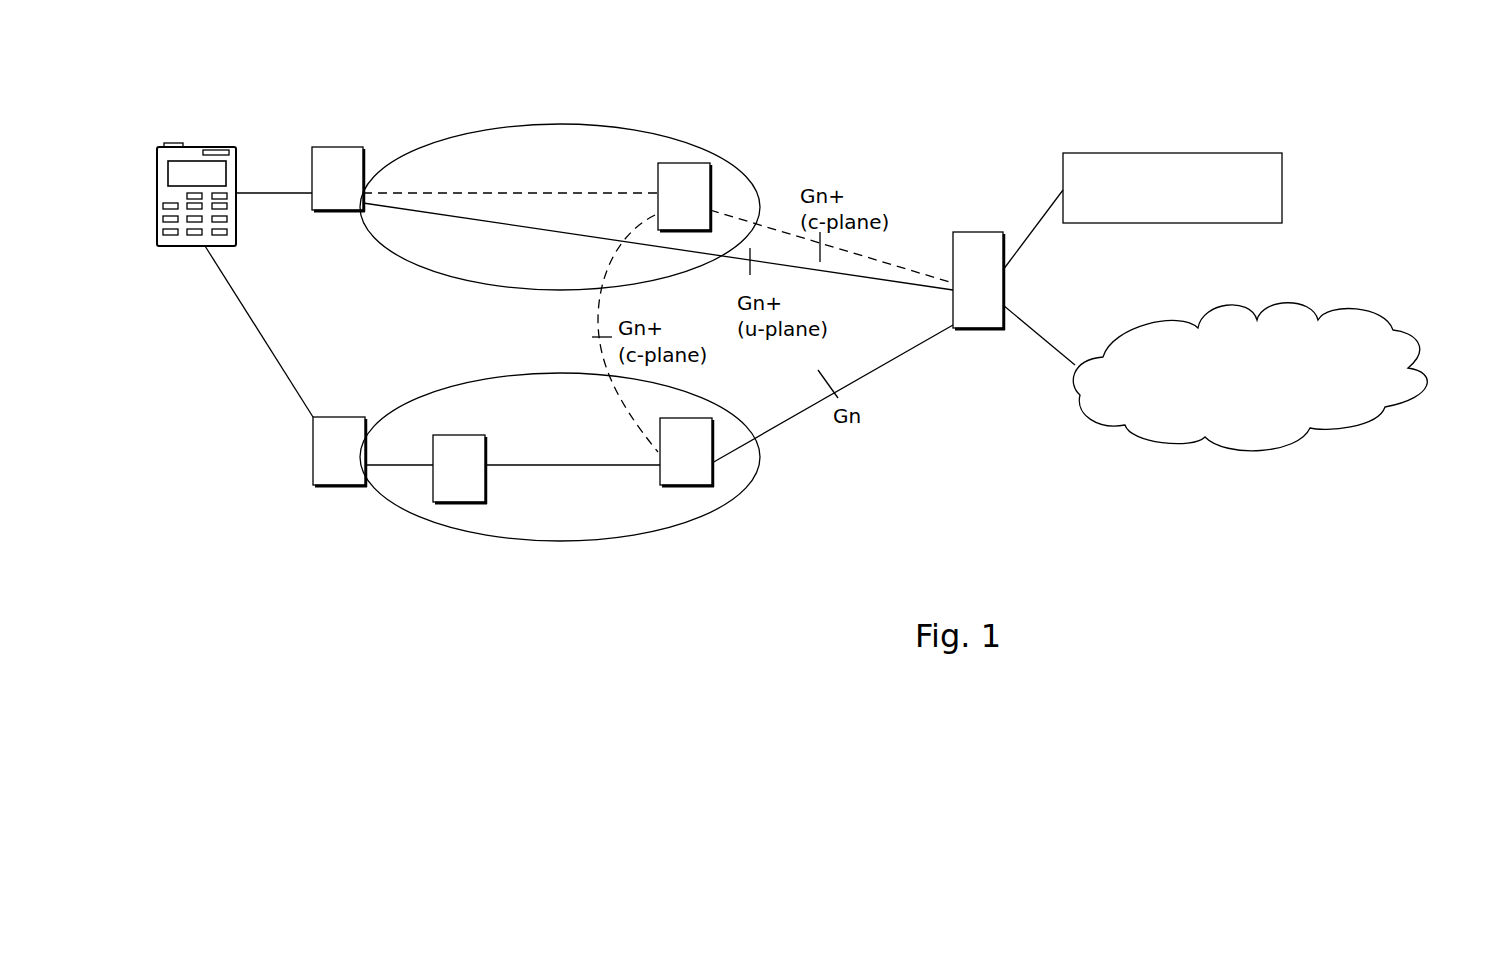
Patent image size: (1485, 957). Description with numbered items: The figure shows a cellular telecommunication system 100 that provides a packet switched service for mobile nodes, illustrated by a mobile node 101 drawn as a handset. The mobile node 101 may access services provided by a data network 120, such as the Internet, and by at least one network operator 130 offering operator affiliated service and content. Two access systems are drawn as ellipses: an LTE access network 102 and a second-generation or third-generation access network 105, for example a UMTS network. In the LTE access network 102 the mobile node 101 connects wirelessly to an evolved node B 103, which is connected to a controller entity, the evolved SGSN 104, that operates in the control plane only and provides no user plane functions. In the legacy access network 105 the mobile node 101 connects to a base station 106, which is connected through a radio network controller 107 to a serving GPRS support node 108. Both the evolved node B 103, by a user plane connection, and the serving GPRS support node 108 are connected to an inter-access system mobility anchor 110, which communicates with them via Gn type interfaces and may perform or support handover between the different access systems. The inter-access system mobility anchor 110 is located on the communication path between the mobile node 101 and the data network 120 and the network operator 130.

The cellular telecommunication system 100 is at (252, 50).
The mobile node 101 is at (190, 160).
The LTE access network 102 is at (470, 148).
The evolved node B (eNB) 103 is at (331, 160).
The evolved SGSN (eGSN-c) 104 is at (690, 180).
The 2G/3G access network 105 is at (498, 506).
The base station (BS) 106 is at (338, 470).
The radio network controller (RNC) 107 is at (443, 468).
The serving GPRS support node (SGSN) 108 is at (683, 472).
The inter-access system mobility anchor 110 is at (980, 262).
The data network 120 is at (1160, 418).
The network operator 130 is at (1103, 152).